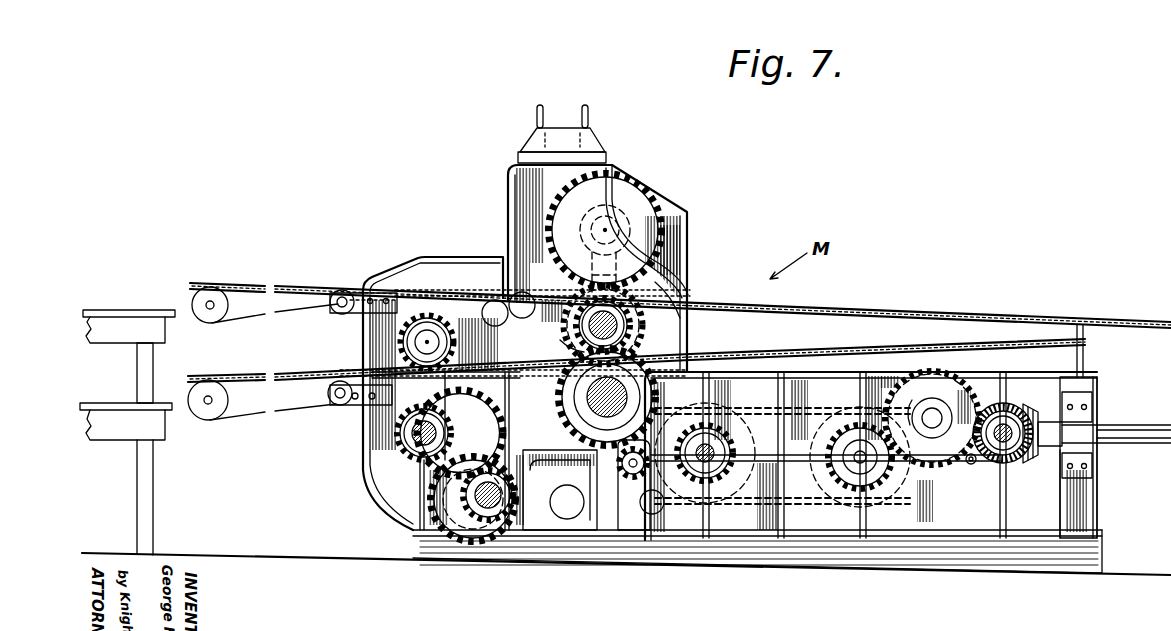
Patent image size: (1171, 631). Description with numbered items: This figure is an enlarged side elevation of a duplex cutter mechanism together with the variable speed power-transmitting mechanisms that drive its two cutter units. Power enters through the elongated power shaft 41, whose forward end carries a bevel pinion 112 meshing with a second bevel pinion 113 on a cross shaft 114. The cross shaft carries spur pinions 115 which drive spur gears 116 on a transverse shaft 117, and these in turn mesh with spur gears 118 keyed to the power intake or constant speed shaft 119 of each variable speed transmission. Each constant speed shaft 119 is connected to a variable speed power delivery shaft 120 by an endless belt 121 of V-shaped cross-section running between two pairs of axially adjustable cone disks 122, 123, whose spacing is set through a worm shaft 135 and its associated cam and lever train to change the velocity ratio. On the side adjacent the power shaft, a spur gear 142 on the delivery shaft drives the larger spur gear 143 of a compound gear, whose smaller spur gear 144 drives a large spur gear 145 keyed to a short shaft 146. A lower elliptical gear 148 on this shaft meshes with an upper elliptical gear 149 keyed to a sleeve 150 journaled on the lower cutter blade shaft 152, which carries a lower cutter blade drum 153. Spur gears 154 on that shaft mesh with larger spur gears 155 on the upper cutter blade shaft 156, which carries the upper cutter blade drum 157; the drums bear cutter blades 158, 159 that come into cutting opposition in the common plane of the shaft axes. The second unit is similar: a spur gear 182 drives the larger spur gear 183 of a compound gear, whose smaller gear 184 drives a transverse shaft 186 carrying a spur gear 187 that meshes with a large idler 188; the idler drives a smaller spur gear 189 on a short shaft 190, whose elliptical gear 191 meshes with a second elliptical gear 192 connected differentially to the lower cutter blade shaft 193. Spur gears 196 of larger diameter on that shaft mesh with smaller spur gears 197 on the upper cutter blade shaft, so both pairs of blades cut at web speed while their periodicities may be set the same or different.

The elongated power shaft 41 is at (1163, 440).
The bevel pinion 112 is at (1046, 452).
The second bevel pinion 113 is at (1035, 458).
The cross shaft 114 is at (1000, 446).
The spur pinions 115 is at (1023, 399).
The spur gears 116 is at (946, 368).
The transverse shaft 117 is at (932, 415).
The spur gears 118 is at (868, 422).
The power intake or constant speed shaft 119 is at (858, 464).
The variable speed power delivery shaft 120 is at (712, 447).
The endless belt 121 is at (785, 540).
The cone disks 122 is at (736, 514).
The cone disks 123 is at (905, 520).
The worm shaft 135 is at (970, 465).
The spur gear 142 is at (738, 400).
The larger spur gear 143 is at (697, 358).
The smaller spur gear 144 is at (622, 492).
The large spur gear 145 is at (700, 346).
The short shaft 146 is at (600, 400).
The lower elliptical gear 148 is at (598, 380).
The upper elliptical gear 149 is at (618, 318).
The sleeve 150 is at (587, 311).
The lower cutter blade shaft 152 is at (590, 270).
The lower cutter blade drum 153 is at (572, 342).
The spur gears 154 is at (688, 264).
The larger spur gears 155 is at (548, 200).
The upper cutter blade shaft 156 is at (678, 203).
The upper cutter blade drum 157 is at (600, 229).
The cutter blade 158 is at (613, 167).
The cutter blade 159 is at (643, 294).
The spur gear 182 is at (700, 545).
The larger spur gear 183 is at (592, 545).
The smaller gear 184 is at (584, 532).
The transverse shaft 186 is at (655, 512).
The spur gear 187 is at (645, 545).
The large idler 188 is at (535, 560).
The smaller spur gear 189 is at (476, 542).
The short shaft 190 is at (494, 517).
The elliptical gear 191 is at (452, 540).
The second elliptical gear 192 is at (395, 424).
The lower cutter blade shaft 193 is at (408, 438).
The spur gears 196 is at (392, 470).
The spur gears 197 is at (410, 342).